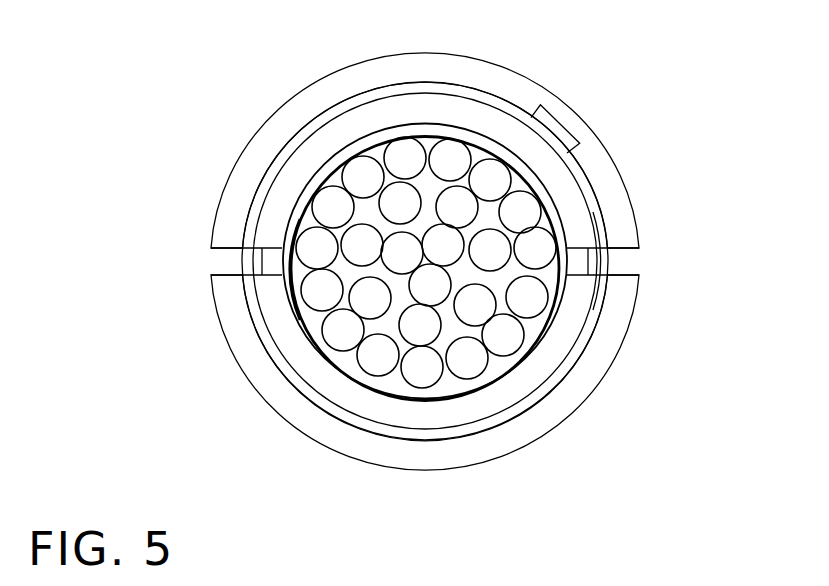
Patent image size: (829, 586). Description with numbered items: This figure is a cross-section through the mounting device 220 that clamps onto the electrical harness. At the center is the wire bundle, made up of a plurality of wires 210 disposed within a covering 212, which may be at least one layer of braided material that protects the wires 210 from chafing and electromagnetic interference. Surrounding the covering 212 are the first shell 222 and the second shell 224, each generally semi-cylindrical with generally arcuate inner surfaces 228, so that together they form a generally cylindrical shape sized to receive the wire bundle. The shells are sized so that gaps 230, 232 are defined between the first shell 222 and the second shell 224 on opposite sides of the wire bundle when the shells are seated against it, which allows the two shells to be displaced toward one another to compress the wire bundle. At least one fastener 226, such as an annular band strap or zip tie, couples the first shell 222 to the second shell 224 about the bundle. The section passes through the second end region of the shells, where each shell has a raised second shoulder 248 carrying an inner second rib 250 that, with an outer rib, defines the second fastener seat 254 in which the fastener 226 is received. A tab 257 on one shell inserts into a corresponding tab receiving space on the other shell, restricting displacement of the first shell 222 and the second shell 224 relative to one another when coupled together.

The wires 210 is at (523, 303).
The covering 212 is at (487, 126).
The mounting device 220 is at (446, 262).
The first shell 222 is at (238, 138).
The second shell 224 is at (280, 430).
The fastener 226 is at (593, 212).
The inner surfaces 228 is at (300, 219).
The gap 230 is at (204, 252).
The gap 232 is at (658, 258).
The second shoulder 248 is at (446, 289).
The inner second rib 250 is at (424, 252).
The second fastener seat 254 is at (357, 105).
The tab 257 is at (268, 256).